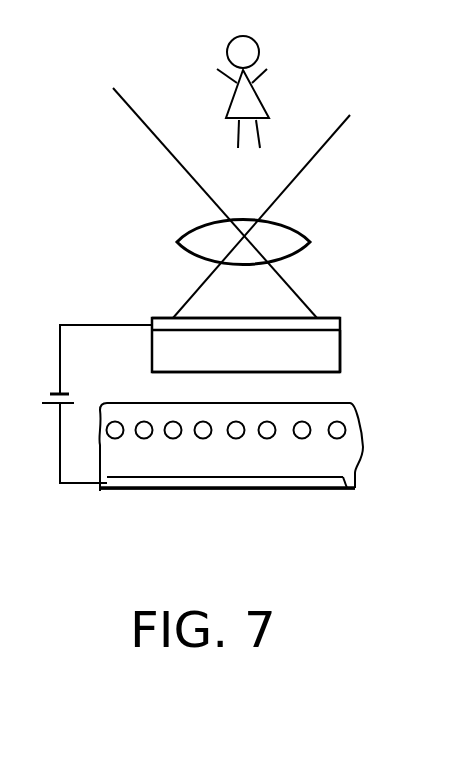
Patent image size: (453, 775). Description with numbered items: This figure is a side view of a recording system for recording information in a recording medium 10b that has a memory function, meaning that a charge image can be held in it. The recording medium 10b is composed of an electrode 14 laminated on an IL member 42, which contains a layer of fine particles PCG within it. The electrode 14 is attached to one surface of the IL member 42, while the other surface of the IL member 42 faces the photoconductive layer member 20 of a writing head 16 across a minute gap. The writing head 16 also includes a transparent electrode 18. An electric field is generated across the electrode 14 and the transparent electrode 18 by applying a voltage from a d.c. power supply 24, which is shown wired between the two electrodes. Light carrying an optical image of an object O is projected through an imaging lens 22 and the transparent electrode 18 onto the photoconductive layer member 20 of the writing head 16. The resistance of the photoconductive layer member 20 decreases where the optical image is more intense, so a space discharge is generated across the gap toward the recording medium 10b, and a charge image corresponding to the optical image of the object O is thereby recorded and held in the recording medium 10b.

The object O is at (273, 88).
The imaging lens 22 is at (292, 240).
The writing head 16 is at (148, 310).
The transparent electrode 18 is at (323, 318).
The photoconductive layer member 20 is at (327, 353).
The d.c. power supply 24 is at (38, 403).
The recording medium 10b is at (375, 438).
The fine particles PCG is at (337, 427).
The electrode 14 is at (138, 485).
The IL member 42 is at (333, 468).